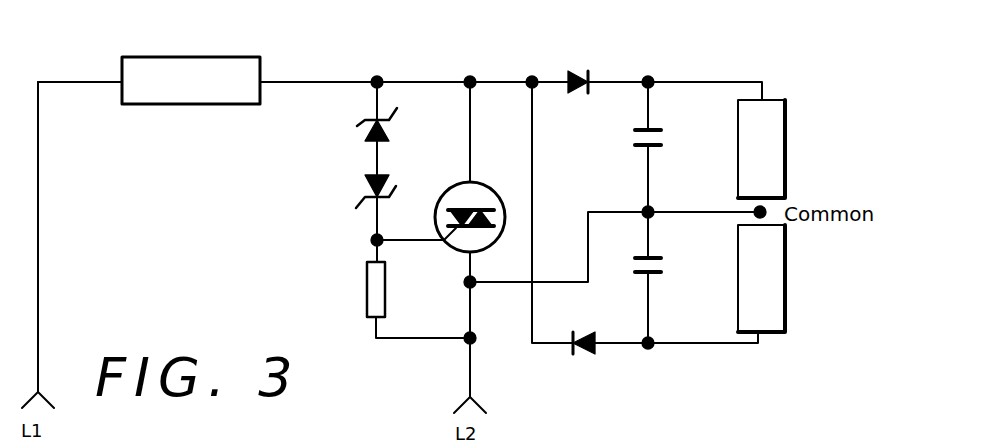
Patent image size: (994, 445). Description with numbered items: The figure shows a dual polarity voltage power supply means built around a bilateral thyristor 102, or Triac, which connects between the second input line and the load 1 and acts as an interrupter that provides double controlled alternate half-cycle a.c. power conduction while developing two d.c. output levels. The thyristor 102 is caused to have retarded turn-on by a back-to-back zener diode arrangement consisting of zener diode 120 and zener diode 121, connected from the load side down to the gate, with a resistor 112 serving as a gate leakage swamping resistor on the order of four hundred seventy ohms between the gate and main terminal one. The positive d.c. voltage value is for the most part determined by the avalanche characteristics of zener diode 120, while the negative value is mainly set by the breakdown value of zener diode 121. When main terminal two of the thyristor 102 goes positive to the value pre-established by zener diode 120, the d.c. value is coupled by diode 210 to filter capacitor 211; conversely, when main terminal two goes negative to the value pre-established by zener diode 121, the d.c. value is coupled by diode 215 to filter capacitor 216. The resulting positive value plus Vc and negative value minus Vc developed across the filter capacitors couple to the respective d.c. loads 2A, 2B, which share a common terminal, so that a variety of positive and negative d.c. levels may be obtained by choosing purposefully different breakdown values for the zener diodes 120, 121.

The load 1 is at (204, 69).
The zener diode 120 is at (361, 138).
The zener diode 121 is at (355, 200).
The resistor 112 is at (372, 296).
The bilateral thyristor 102 is at (486, 202).
The diode 210 is at (592, 79).
The filter capacitor 211 is at (637, 148).
The filter capacitor 216 is at (680, 268).
The diode 215 is at (607, 322).
The d.c. load 2A is at (774, 168).
The d.c. load 2B is at (768, 292).